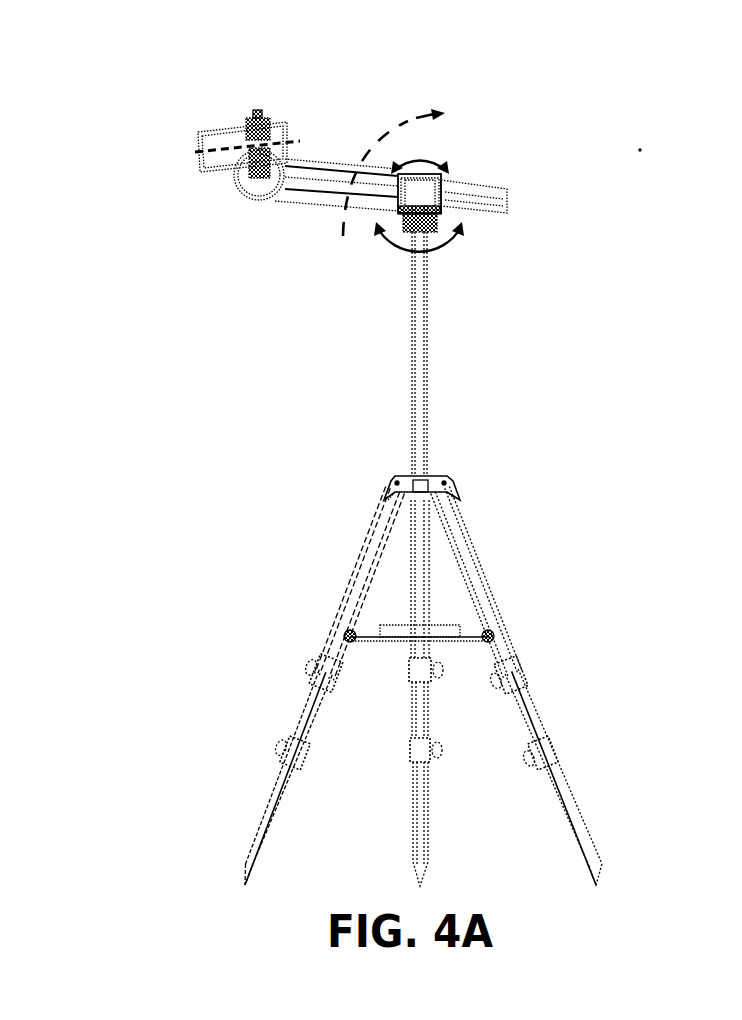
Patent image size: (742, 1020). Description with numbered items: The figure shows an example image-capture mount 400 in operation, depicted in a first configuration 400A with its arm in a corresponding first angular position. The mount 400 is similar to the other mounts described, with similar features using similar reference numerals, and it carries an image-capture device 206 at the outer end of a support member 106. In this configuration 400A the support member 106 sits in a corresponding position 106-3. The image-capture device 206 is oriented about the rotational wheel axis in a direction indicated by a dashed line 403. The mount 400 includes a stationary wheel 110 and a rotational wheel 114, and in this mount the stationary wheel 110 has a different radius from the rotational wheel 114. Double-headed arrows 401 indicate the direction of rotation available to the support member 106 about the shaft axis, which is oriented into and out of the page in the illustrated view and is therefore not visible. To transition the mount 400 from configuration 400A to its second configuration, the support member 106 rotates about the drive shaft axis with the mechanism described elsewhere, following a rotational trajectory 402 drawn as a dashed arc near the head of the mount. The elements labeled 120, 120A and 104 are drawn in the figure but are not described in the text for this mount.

The mount 400 is at (143, 120).
The configuration 400A is at (645, 147).
The device holder 120 is at (237, 112).
The device holder 120A is at (303, 138).
The image-capture device 206 is at (225, 140).
The rotational wheel 114 is at (257, 187).
The dashed line 403 is at (178, 152).
The support member 106 is at (294, 221).
The position 106-3 is at (335, 188).
The rotational trajectory 402 is at (399, 122).
The stationary wheel 110 is at (445, 170).
The mounting base 104 is at (424, 202).
The double-headed arrows 401 is at (420, 168).